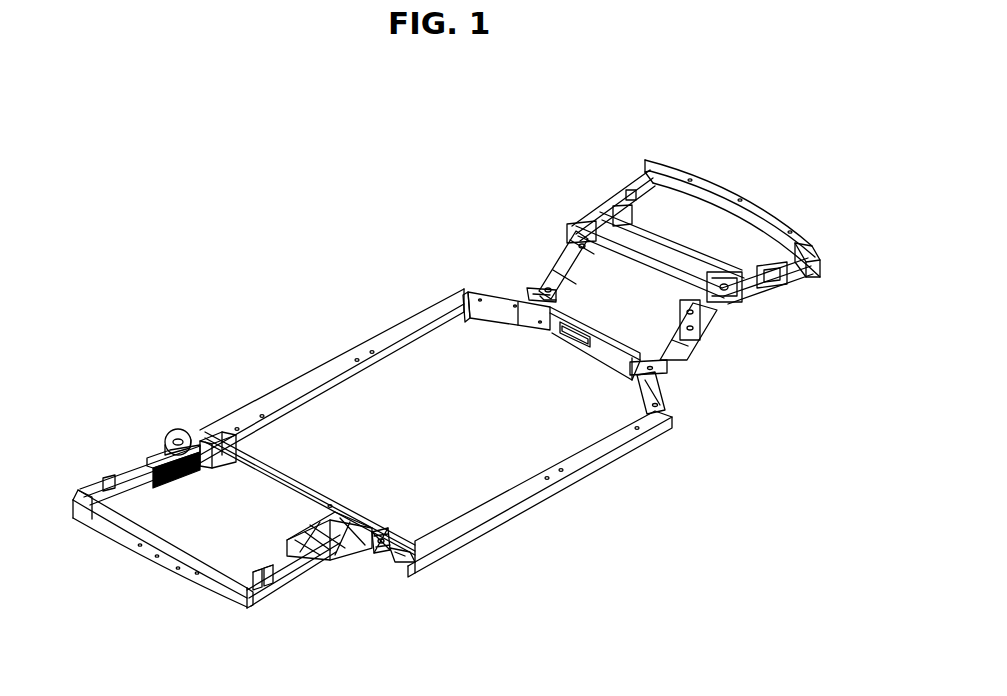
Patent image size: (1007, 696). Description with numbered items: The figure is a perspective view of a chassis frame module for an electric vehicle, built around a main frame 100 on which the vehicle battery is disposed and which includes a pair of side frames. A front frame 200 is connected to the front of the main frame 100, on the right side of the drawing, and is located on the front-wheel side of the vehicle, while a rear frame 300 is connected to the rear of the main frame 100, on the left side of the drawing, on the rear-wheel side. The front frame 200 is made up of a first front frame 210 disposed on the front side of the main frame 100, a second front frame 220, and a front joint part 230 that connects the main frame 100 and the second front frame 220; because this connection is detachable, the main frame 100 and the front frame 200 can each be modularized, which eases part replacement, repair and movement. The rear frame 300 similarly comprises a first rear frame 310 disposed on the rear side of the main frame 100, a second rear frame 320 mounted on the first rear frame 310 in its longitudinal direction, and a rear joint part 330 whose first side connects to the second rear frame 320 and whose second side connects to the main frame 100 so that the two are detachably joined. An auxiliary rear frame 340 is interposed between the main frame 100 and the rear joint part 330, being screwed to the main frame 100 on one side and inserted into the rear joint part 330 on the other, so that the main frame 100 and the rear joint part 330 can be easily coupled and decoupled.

The main frame 100 is at (315, 332).
The front frame 200 is at (607, 174).
The first front frame 210 is at (720, 298).
The second front frame 220 is at (660, 392).
The front joint part 230 is at (457, 290).
The rear frame 300 is at (130, 438).
The first rear frame 310 is at (263, 584).
The second rear frame 320 is at (314, 558).
The rear joint part 330 is at (393, 560).
The auxiliary rear frame 340 is at (430, 563).